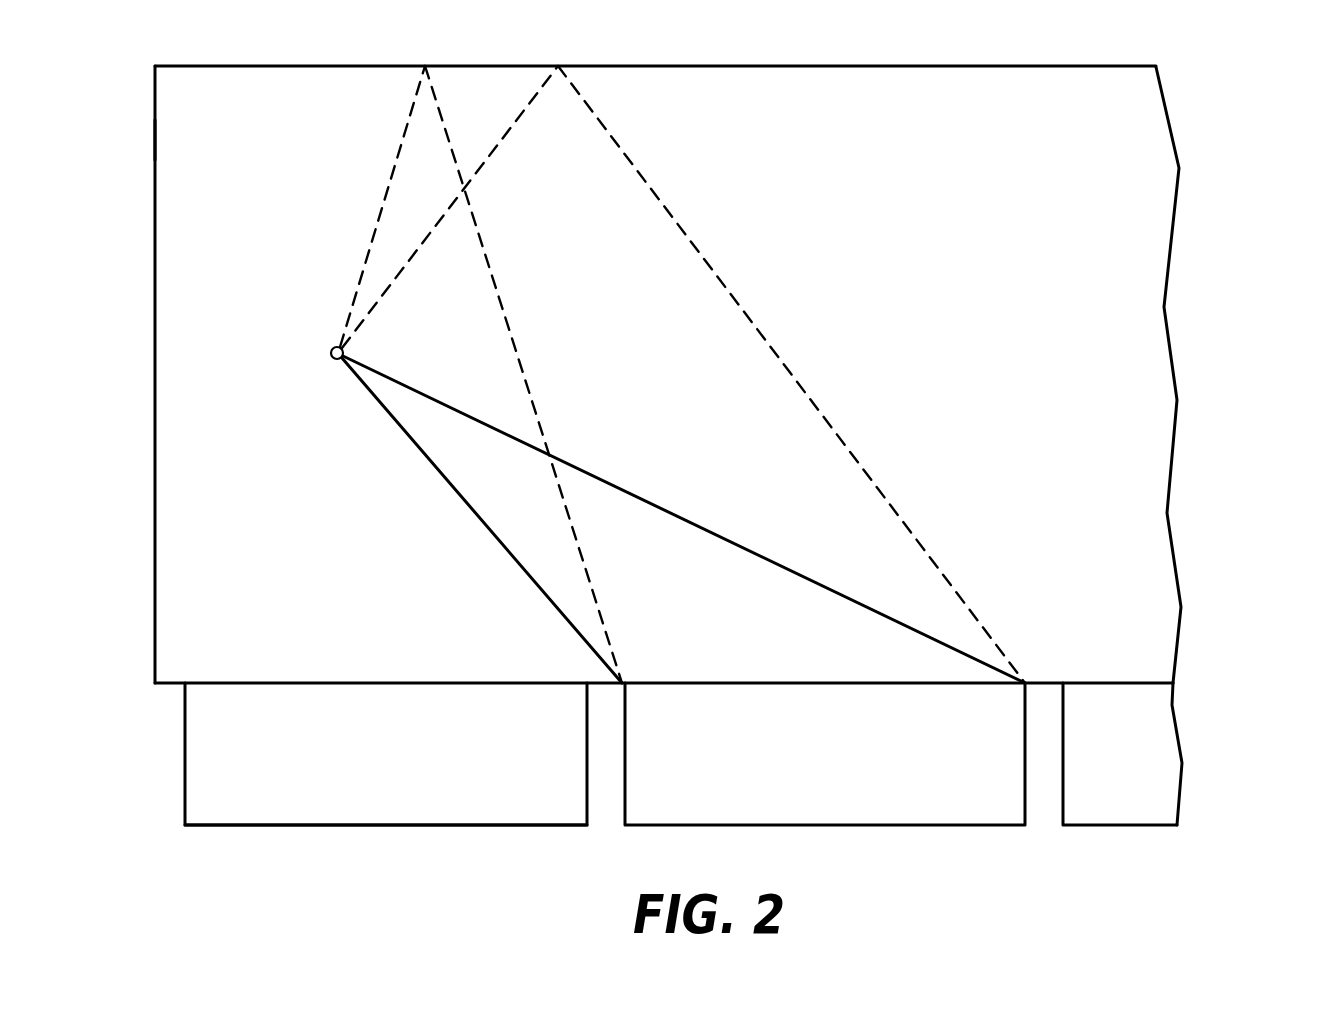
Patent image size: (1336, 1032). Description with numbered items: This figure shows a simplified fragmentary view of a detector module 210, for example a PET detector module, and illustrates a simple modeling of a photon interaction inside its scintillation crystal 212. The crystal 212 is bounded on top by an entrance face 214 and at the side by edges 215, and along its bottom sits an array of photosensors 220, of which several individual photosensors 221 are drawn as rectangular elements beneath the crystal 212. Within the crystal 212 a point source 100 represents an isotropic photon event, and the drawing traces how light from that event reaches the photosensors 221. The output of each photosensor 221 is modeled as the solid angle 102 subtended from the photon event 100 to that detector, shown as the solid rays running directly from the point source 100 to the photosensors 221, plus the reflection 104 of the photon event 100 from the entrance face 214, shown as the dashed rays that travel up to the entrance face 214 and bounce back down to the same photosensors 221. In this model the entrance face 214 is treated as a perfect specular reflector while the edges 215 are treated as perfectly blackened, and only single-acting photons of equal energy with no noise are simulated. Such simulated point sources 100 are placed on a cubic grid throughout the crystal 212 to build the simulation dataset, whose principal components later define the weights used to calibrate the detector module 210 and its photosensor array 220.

The point source 100 is at (331, 348).
The solid angle 102 is at (443, 478).
The reflection 104 is at (603, 124).
The detector module 210 is at (1218, 107).
The scintillation crystal 212 is at (153, 571).
The entrance face 214 is at (231, 66).
The edges 215 is at (155, 140).
The array of photosensors 220 is at (369, 826).
The photosensor 221 is at (476, 805).